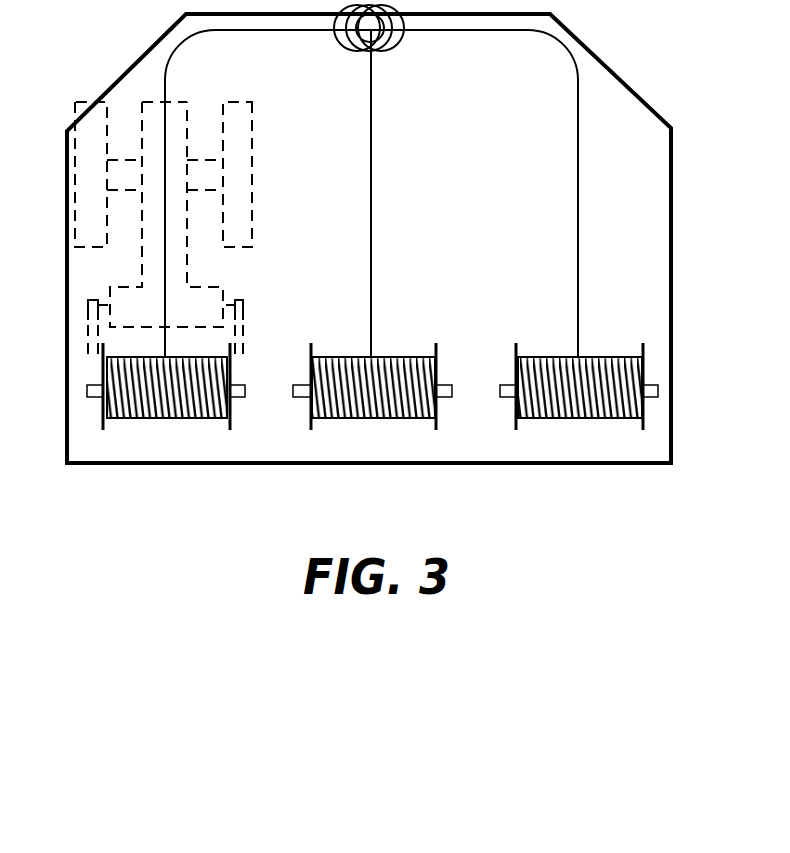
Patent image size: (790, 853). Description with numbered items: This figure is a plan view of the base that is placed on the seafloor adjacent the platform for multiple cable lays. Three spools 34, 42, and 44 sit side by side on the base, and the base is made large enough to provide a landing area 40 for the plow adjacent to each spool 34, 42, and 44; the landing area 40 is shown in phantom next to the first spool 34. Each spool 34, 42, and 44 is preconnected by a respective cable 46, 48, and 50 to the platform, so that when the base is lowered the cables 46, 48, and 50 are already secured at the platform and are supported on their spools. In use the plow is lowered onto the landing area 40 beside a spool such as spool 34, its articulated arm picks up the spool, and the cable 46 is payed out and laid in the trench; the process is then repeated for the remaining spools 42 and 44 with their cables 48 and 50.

The spool 34 is at (157, 407).
The landing area 40 is at (182, 239).
The spool 42 is at (363, 407).
The spool 44 is at (590, 407).
The cable 46 is at (165, 318).
The cable 48 is at (372, 261).
The cable 50 is at (578, 288).